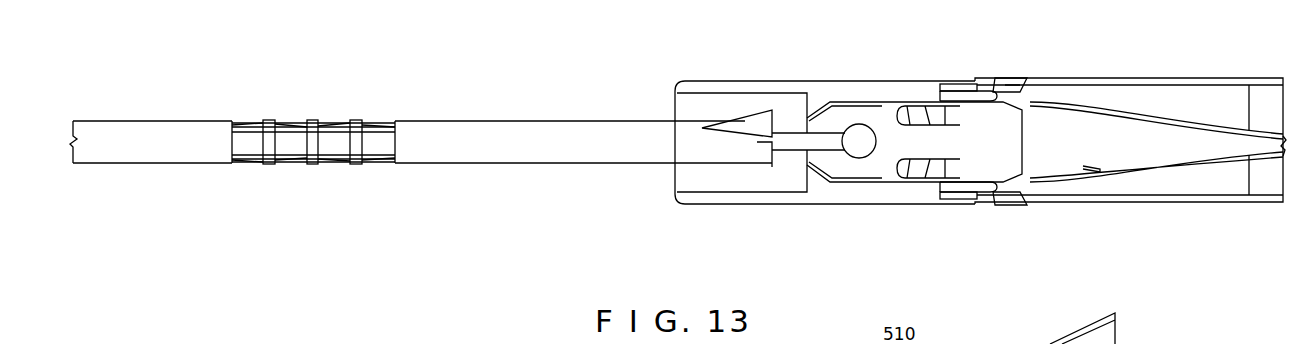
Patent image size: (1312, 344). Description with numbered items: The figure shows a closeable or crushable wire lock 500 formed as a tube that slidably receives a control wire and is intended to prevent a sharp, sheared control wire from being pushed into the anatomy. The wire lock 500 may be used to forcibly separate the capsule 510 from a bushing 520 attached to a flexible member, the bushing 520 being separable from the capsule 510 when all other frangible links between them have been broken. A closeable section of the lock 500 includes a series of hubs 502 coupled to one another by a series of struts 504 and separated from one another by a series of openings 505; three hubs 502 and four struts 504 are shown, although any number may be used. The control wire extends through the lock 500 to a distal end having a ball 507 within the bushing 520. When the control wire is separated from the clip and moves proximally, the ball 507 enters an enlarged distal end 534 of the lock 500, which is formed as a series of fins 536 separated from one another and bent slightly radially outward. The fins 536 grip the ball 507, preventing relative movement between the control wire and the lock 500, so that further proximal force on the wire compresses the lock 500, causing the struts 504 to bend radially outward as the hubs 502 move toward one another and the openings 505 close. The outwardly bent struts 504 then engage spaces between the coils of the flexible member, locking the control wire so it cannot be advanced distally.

The closeable wire lock 500 is at (523, 121).
The hubs 502 is at (358, 164).
The struts 504 is at (380, 118).
The openings 505 is at (248, 145).
The ball 507 is at (858, 150).
The capsule 510 is at (1187, 78).
The bushing 520 is at (837, 84).
The enlarged distal end 534 is at (735, 148).
The fins 536 is at (760, 148).